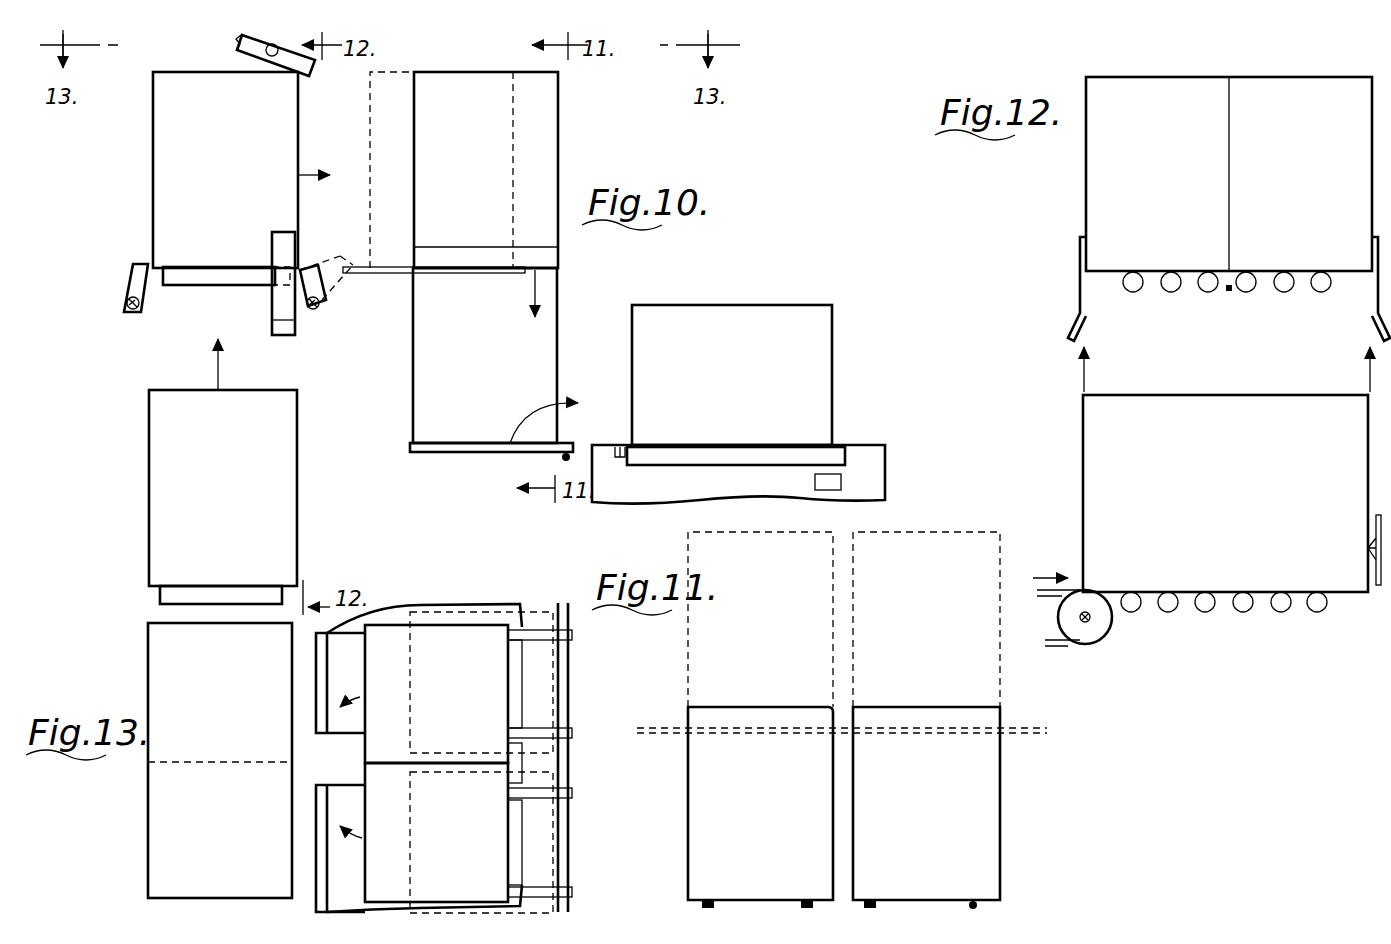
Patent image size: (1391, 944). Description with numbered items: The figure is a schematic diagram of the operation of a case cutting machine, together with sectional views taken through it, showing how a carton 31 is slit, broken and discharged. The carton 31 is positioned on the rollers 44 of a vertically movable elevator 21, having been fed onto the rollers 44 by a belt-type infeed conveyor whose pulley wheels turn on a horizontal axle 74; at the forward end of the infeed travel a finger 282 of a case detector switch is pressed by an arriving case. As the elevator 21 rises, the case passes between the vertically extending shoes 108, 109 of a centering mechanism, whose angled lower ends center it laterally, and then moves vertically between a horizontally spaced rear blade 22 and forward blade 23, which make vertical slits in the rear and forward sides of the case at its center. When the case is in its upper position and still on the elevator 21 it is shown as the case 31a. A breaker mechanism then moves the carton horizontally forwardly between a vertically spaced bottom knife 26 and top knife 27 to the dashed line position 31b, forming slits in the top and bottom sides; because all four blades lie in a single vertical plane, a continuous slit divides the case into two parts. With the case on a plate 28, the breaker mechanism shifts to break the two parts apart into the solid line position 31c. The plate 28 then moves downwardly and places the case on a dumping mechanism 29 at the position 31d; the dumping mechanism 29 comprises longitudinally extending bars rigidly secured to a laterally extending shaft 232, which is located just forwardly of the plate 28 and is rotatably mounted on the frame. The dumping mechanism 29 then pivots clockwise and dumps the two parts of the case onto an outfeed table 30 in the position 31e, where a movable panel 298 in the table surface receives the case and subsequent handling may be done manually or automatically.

In FIG. 10, the case in upper position 31a is at (255, 192).
In FIG. 12, the case in upper position 31a is at (1295, 172).
In FIG. 13, the case in upper position 31a is at (255, 711).
In FIG. 10, the case in dashed line position 31b is at (505, 108).
In FIG. 13, the case in dashed line position 31b is at (368, 778).
In FIG. 10, the case parts in solid line position 31c is at (552, 140).
In FIG. 11, the case parts in solid line position 31c is at (878, 548).
In FIG. 13, the case parts in solid line position 31c is at (575, 714).
In FIG. 10, the case on dumping mechanism 31d is at (512, 379).
In FIG. 11, the case on dumping mechanism 31d is at (866, 712).
In FIG. 10, the case on table 31e is at (760, 382).
In FIG. 10, the carton 31 is at (240, 497).
In FIG. 12, the carton 31 is at (1225, 493).
In FIG. 10, the elevator 21 is at (160, 597).
In FIG. 12, the elevator 21 is at (1260, 620).
In FIG. 10, the rear blade 22 is at (153, 272).
In FIG. 10, the forward blade 23 is at (295, 275).
In FIG. 10, the bottom knife 26 is at (302, 268).
In FIG. 10, the top knife 27 is at (298, 72).
In FIG. 10, the plate 28 is at (385, 280).
In FIG. 11, the plate 28 is at (1027, 727).
In FIG. 13, the plate 28 is at (352, 889).
In FIG. 10, the dumping mechanism 29 is at (474, 456).
In FIG. 11, the dumping mechanism 29 is at (980, 910).
In FIG. 10, the outfeed table 30 is at (885, 442).
In FIG. 10, the rollers 44 is at (222, 285).
In FIG. 12, the horizontal axle 74 is at (1090, 620).
In FIG. 12, the shoe 108 is at (1086, 304).
In FIG. 12, the shoe 109 is at (1372, 304).
In FIG. 10, the shaft 232 is at (562, 457).
In FIG. 13, the shaft 232 is at (565, 838).
In FIG. 12, the finger 282 is at (1368, 558).
In FIG. 10, the table bar 298 is at (782, 464).